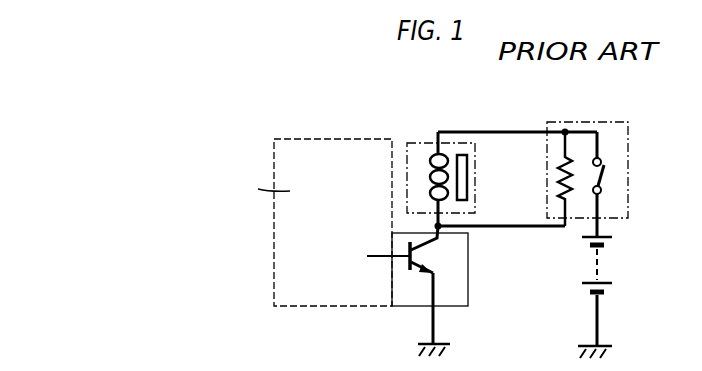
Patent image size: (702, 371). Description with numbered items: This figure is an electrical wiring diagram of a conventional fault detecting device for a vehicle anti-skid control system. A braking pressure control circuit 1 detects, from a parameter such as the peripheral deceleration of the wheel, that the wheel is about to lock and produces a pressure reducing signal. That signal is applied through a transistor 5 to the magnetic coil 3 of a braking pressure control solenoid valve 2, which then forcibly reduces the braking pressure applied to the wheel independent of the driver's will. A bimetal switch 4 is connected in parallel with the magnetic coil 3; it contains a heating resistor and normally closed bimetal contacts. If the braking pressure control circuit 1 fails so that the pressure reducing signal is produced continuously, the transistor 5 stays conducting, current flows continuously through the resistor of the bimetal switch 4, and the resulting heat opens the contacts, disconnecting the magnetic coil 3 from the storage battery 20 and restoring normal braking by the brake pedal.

The braking pressure control circuit 1 is at (325, 139).
The braking pressure control solenoid valve 2 is at (474, 151).
The magnetic coil 3 is at (432, 160).
The bimetal switch 4 is at (630, 160).
The transistor 5 is at (424, 253).
The storage battery 20 is at (605, 258).